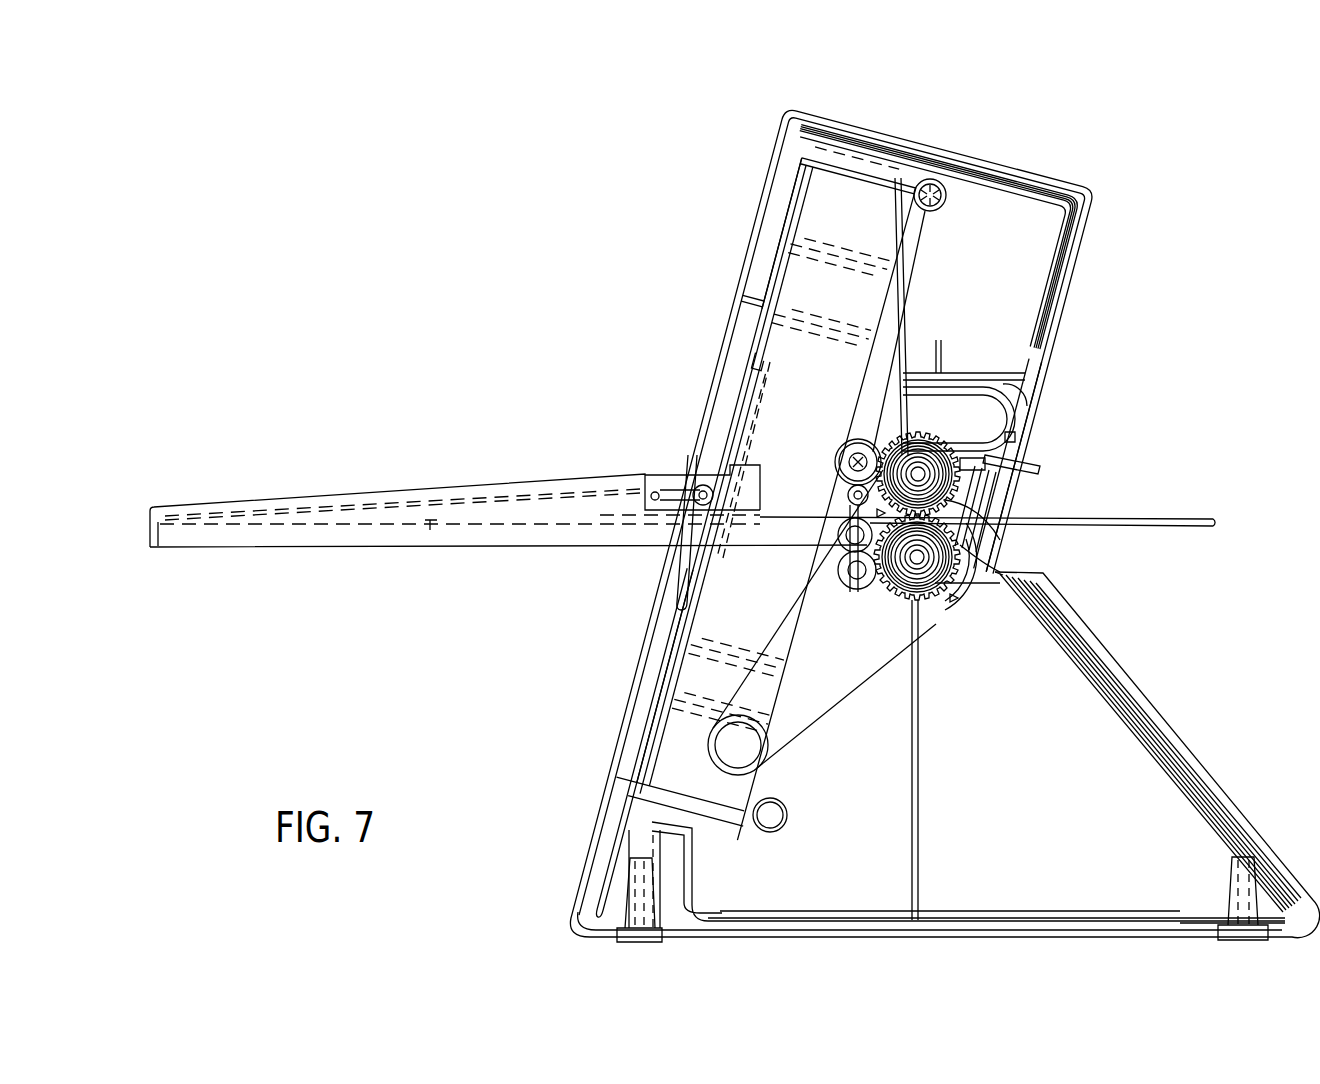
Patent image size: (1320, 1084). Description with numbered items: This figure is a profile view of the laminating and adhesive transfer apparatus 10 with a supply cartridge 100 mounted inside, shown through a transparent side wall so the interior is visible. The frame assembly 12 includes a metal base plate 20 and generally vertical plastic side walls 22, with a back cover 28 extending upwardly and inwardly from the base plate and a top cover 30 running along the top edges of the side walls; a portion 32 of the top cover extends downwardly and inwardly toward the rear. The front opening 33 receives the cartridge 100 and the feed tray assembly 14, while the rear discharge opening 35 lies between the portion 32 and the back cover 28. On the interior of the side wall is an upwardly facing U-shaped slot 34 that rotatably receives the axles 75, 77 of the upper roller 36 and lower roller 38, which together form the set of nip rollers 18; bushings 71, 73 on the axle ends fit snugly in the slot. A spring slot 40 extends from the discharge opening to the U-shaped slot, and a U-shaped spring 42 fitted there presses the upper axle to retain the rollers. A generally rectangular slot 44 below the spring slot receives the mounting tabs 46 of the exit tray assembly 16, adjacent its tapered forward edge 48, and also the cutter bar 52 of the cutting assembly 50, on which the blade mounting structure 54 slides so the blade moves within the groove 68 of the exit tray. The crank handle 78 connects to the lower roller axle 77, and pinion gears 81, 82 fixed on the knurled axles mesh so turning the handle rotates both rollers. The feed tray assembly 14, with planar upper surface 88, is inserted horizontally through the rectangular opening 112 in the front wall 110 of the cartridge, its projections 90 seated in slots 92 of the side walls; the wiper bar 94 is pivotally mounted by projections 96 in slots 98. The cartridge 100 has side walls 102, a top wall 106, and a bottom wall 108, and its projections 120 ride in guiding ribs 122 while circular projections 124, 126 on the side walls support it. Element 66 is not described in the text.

The laminating and adhesive transfer apparatus 10 is at (681, 151).
The frame assembly 12 is at (1098, 278).
The feed tray assembly 14 is at (228, 555).
The exit tray assembly 16 is at (1188, 533).
The set of nip rollers 18 is at (920, 605).
The metal base plate 20 is at (973, 925).
The side walls 22 is at (1126, 885).
The back cover 28 is at (1190, 742).
The top cover 30 is at (1040, 180).
The portion of the top cover 32 is at (1083, 237).
The opening 33 is at (625, 728).
The U-shaped nip roller receiving slot 34 is at (851, 572).
The discharge opening 35 is at (1047, 382).
The upper roller 36 is at (919, 442).
The lower roller 38 is at (939, 605).
The spring slot 40 is at (944, 395).
The U-shaped spring 42 is at (980, 386).
The generally rectangular slot 44 is at (1044, 470).
The mounting tabs 46 is at (960, 600).
The tapered forward edge 48 is at (961, 462).
The cutting assembly 50 is at (1039, 447).
The cutter bar 52 is at (961, 520).
The blade mounting structure 54 is at (999, 488).
The joint 66 is at (1039, 464).
The groove 68 is at (1001, 560).
The bushing 71 is at (914, 455).
The bushing 73 is at (907, 563).
The axle 75 is at (939, 458).
The axle 77 is at (911, 590).
The crank handle 78 is at (795, 738).
The pinion gear 81 is at (936, 603).
The pinion gear 82 is at (890, 442).
The planar upper surface 88 is at (384, 492).
The projections 90 is at (699, 486).
The slots 92 is at (688, 478).
The wiper bar 94 is at (756, 474).
The projections 96 is at (650, 512).
The slots 98 is at (646, 480).
The cartridge 100 is at (784, 215).
The side walls 102 is at (778, 338).
The top wall 106 is at (856, 150).
The bottom wall 108 is at (714, 836).
The front wall 110 is at (788, 178).
The rectangular opening 112 is at (741, 376).
The projections 120 is at (846, 478).
The guiding ribs 122 is at (846, 497).
The circular projection 124 is at (931, 180).
The circular projection 126 is at (785, 833).